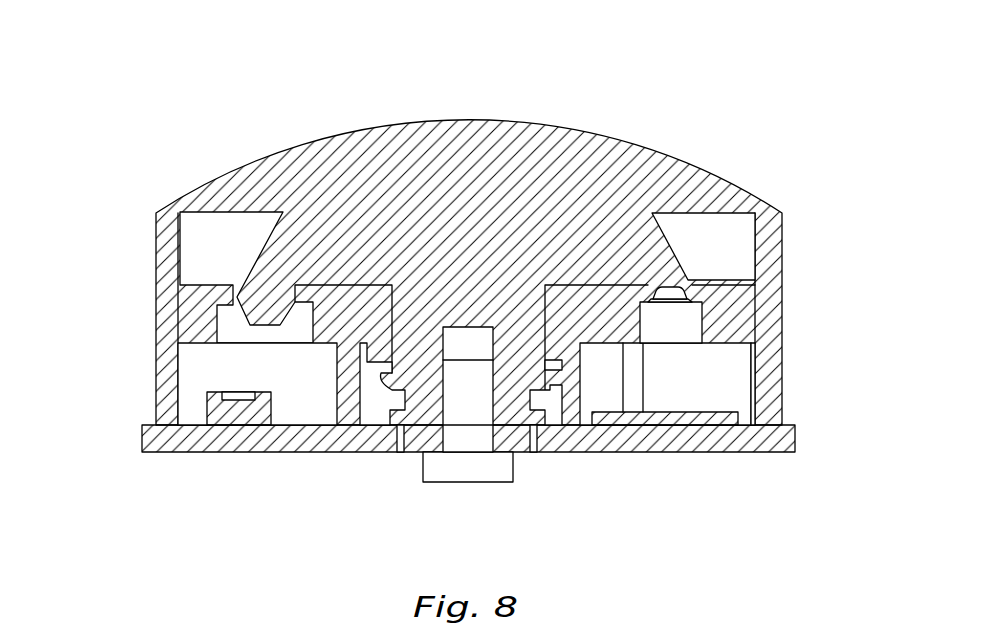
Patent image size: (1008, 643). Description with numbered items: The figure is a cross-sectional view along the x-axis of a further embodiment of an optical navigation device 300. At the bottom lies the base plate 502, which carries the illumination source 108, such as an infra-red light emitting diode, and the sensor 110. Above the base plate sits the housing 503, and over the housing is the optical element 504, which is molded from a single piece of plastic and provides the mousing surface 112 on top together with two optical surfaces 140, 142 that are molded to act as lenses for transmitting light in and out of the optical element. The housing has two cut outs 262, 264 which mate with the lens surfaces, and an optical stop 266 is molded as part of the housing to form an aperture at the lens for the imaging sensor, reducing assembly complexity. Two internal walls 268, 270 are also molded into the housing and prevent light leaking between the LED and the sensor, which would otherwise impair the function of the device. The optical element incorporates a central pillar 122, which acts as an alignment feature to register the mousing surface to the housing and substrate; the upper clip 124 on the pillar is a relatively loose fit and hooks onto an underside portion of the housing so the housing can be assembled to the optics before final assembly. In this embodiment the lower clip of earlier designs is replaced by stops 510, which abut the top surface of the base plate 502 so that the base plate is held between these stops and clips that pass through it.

The optical navigation device 300 is at (155, 90).
The mousing surface 112 is at (453, 118).
The optical element 504 is at (613, 173).
The optical surface 140 is at (264, 303).
The housing 503 is at (165, 310).
The optical surface 142 is at (672, 290).
The optical stop 266 is at (673, 304).
The cut out 262 is at (198, 366).
The internal wall 270 is at (572, 368).
The cut out 264 is at (735, 373).
The illumination source 108 is at (248, 410).
The internal wall 268 is at (352, 405).
The stop 510 is at (398, 420).
The central pillar 122 is at (512, 335).
The upper clip 124 is at (543, 382).
The sensor 110 is at (700, 420).
The base plate 502 is at (172, 442).